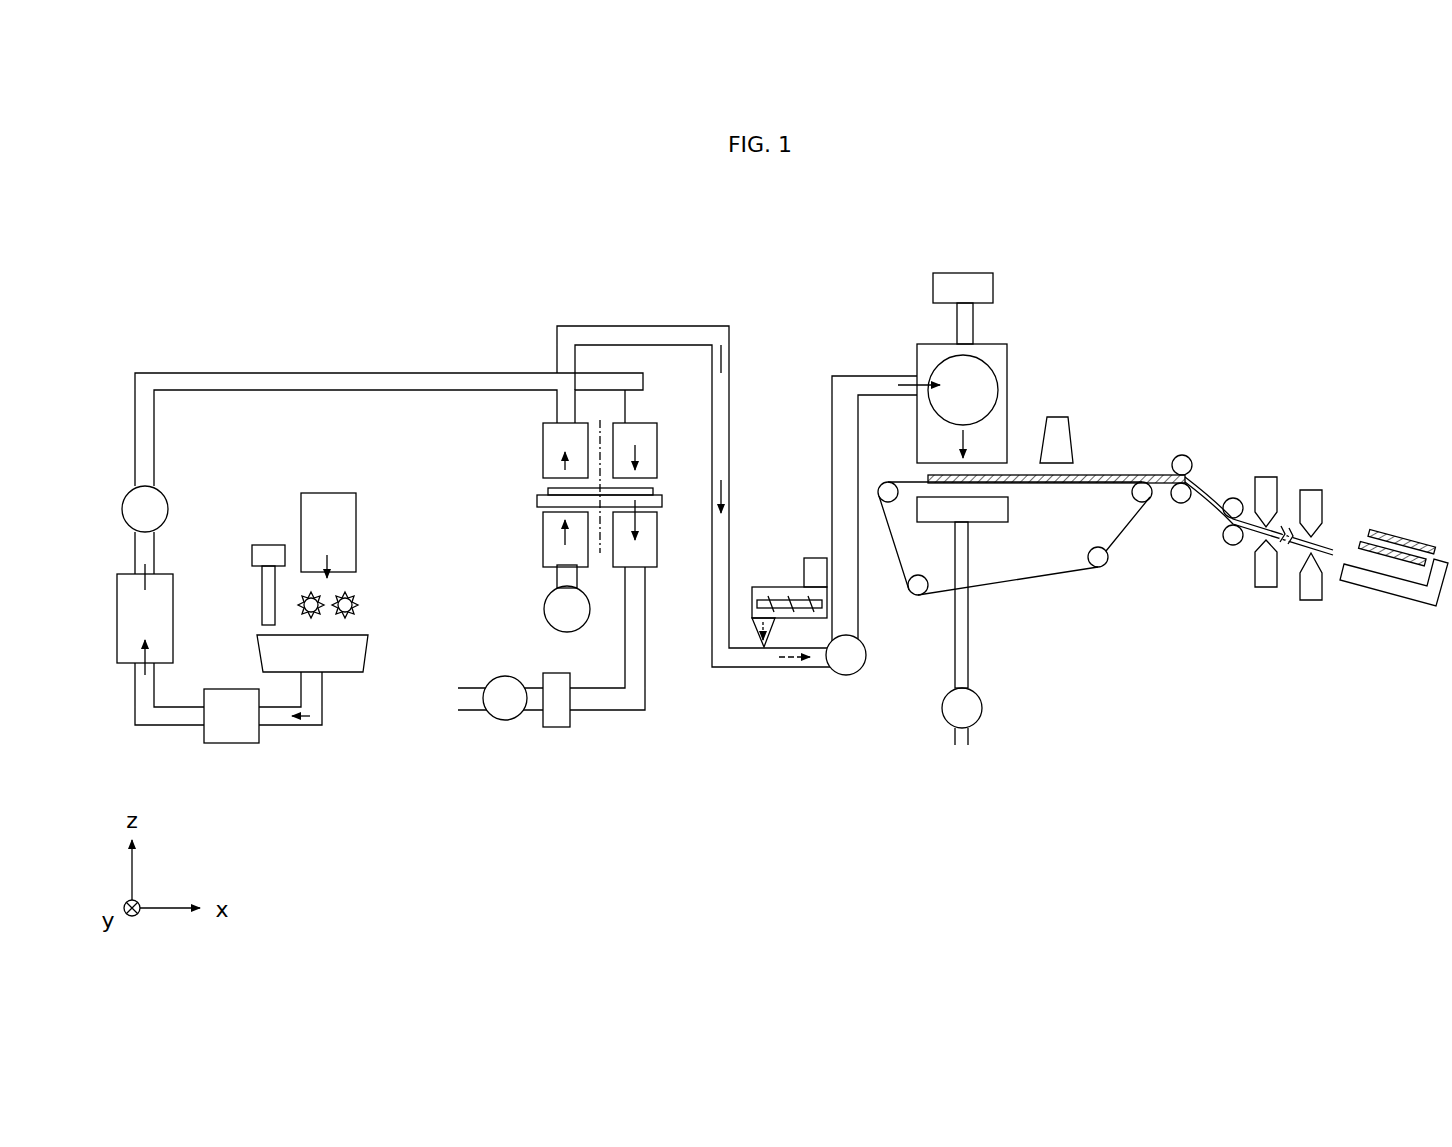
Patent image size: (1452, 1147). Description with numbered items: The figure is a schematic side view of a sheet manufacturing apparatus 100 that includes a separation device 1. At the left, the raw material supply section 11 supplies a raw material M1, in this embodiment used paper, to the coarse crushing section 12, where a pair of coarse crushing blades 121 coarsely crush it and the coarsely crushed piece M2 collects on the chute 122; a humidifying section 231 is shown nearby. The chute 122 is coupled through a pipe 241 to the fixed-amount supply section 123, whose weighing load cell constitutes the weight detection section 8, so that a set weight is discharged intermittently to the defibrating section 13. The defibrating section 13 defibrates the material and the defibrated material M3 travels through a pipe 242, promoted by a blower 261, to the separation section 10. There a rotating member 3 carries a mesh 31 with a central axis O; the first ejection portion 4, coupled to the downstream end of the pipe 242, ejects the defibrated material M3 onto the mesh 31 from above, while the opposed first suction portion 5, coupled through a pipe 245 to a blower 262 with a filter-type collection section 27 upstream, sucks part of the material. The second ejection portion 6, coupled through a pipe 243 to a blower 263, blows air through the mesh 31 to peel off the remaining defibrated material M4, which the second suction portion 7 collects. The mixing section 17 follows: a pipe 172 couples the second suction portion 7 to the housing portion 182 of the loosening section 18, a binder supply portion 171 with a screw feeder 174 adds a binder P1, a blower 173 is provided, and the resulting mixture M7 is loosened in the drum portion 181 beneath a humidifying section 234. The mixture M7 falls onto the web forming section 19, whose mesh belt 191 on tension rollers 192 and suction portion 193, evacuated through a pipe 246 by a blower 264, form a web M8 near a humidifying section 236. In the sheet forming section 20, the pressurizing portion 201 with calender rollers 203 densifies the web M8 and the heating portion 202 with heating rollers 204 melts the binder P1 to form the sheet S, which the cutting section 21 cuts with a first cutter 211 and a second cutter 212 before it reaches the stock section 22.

The sheet manufacturing apparatus 100 is at (1170, 238).
The separation device 1 is at (712, 302).
The pipe 242 is at (190, 372).
The blower 261 is at (128, 492).
The defibrating section 13 is at (175, 603).
The defibrated material M3 is at (140, 583).
The coarsely crushed piece M2 is at (138, 660).
The pipe 241 is at (272, 727).
The weight detection section 8 is at (228, 698).
The fixed-amount supply section 123 is at (228, 745).
The raw material supply section 11 is at (315, 492).
The raw material M1 is at (340, 565).
The humidifying section 231 is at (270, 544).
The coarse crushing section 12 is at (377, 613).
The coarse crushing blades 121 is at (320, 618).
The chute 122 is at (355, 653).
The separation section 10 is at (668, 410).
The defibrated material M4 is at (728, 492).
The central axis O is at (604, 474).
The second suction portion 7 is at (538, 455).
The first ejection portion 4 is at (645, 418).
The rotating member 3 is at (537, 502).
The second ejection portion 6 is at (538, 547).
The first suction portion 5 is at (576, 605).
The mesh 31 is at (653, 533).
The pipe 243 is at (555, 575).
The blower 263 is at (546, 605).
The blower 262 is at (496, 722).
The collection section 27 is at (536, 730).
The pipe 245 is at (530, 712).
The mixing section 17 is at (848, 548).
The pipe 172 is at (865, 643).
The blower 173 is at (860, 672).
The binder supply portion 171 is at (810, 557).
The screw feeder 174 is at (768, 598).
The binder P1 is at (774, 627).
The mixture M7 is at (795, 660).
The loosening section 18 is at (996, 378).
The drum portion 181 is at (998, 376).
The housing portion 182 is at (1000, 344).
The humidifying section 234 is at (968, 272).
The humidifying section 236 is at (1058, 416).
The web M8 is at (1027, 474).
The web forming section 19 is at (1147, 595).
The mesh belt 191 is at (1018, 586).
The tension rollers 192 is at (890, 484).
The suction portion 193 is at (1010, 510).
The pipe 246 is at (970, 660).
The blower 264 is at (983, 708).
The sheet S is at (1228, 505).
The sheet forming section 20 is at (1203, 507).
The pressurizing portion 201 is at (1178, 442).
The calender rollers 203 is at (1232, 418).
The heating portion 202 is at (1198, 565).
The heating rollers 204 is at (1248, 592).
The cutting section 21 is at (1322, 493).
The first cutter 211 is at (1280, 467).
The second cutter 212 is at (1283, 427).
The stock section 22 is at (1408, 600).